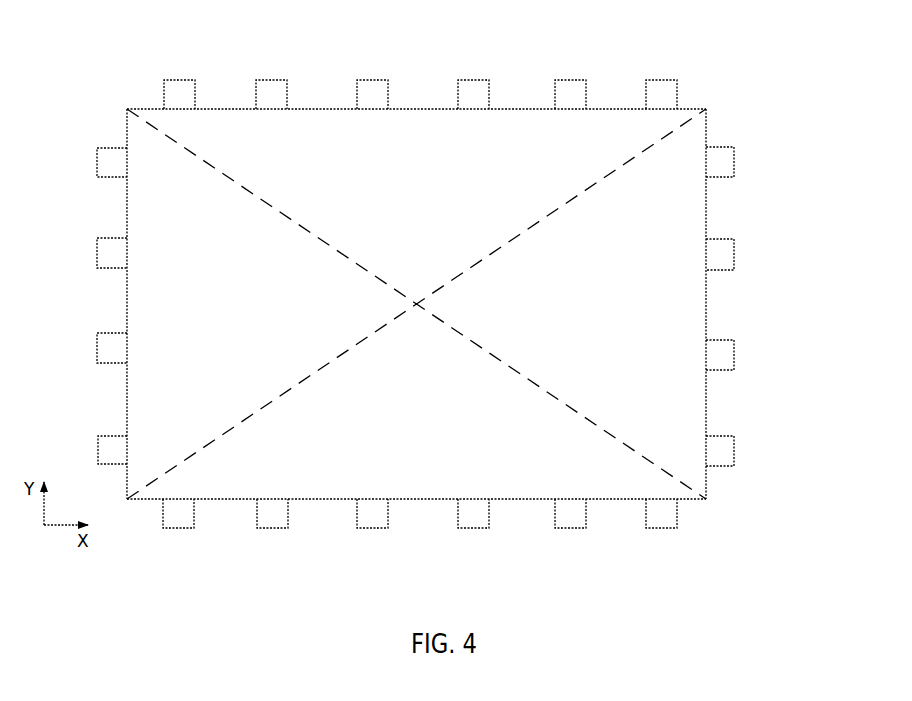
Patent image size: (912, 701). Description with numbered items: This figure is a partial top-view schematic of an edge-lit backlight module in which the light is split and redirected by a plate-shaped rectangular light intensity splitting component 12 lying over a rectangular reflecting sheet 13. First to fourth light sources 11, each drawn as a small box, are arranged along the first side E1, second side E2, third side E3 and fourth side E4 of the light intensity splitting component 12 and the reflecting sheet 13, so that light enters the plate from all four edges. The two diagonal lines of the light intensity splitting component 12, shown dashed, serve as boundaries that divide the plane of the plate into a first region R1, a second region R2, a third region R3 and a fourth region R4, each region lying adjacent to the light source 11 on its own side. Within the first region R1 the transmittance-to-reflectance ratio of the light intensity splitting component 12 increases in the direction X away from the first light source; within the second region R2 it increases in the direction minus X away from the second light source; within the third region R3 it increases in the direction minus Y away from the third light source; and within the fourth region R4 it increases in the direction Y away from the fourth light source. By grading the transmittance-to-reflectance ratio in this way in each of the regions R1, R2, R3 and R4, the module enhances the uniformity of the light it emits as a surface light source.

The light sources 11 is at (98, 450).
The plate-shaped rectangular light intensity splitting component 12 is at (415, 301).
The rectangular reflecting sheet 13 is at (477, 299).
The first side E1 is at (126, 224).
The second side E2 is at (707, 225).
The third side E3 is at (343, 108).
The fourth side E4 is at (440, 500).
The first region R1 is at (260, 292).
The second region R2 is at (560, 290).
The third region R3 is at (418, 182).
The fourth region R4 is at (412, 414).